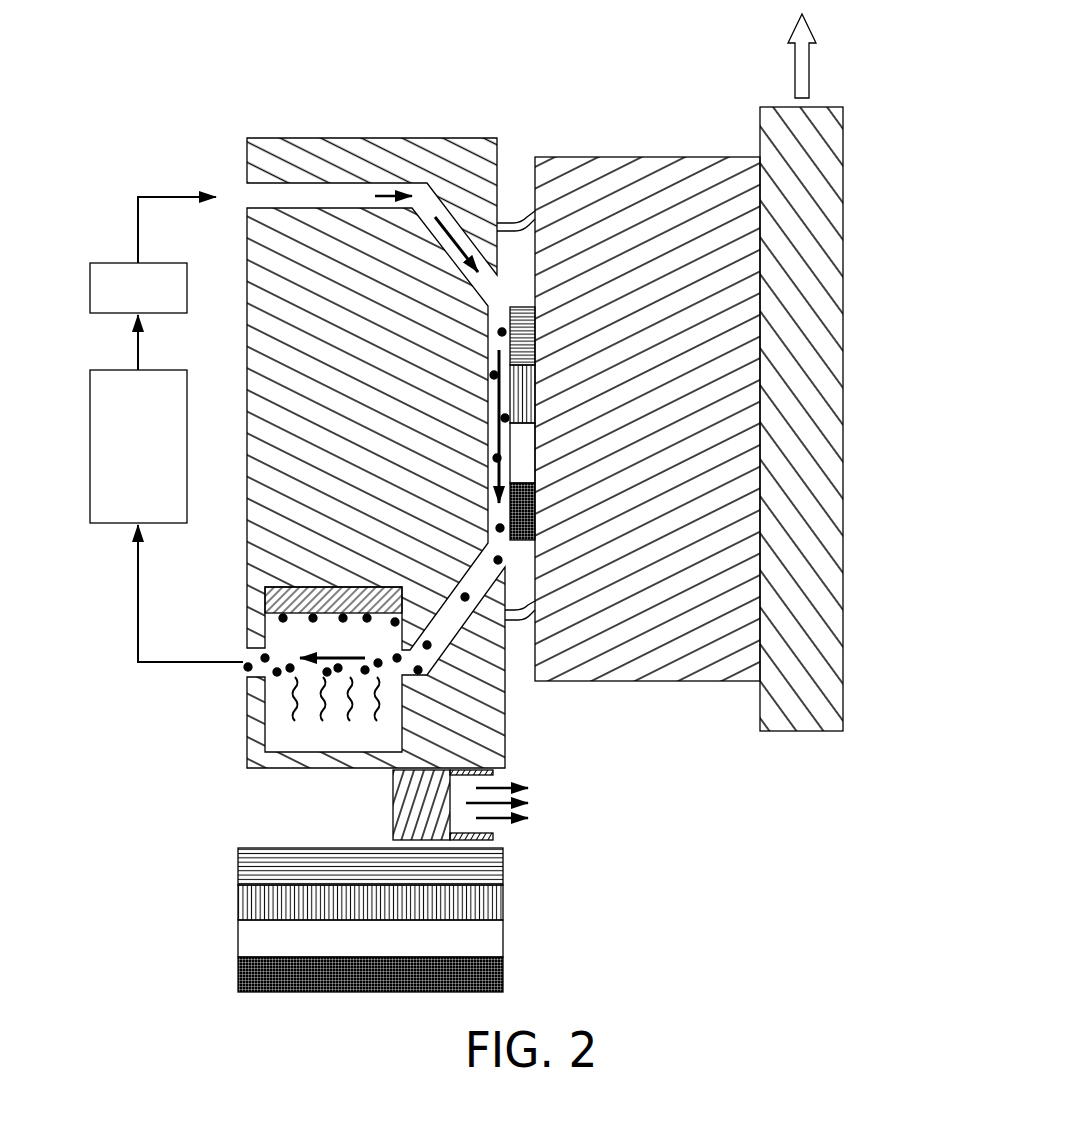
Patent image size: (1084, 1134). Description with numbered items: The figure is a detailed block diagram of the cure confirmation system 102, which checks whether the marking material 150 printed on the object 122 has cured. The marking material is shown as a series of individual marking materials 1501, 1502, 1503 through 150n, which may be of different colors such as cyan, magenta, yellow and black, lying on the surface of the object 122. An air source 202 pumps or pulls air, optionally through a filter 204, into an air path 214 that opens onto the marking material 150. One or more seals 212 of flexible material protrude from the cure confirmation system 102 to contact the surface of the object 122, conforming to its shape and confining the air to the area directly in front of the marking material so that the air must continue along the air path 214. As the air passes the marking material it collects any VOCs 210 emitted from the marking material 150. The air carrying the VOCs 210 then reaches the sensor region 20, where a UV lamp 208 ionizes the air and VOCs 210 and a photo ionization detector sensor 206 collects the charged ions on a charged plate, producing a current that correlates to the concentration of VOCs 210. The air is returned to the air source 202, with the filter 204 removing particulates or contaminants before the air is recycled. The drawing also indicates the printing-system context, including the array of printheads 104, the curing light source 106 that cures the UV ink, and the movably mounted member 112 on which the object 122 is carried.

The PID sensor assembly 20 is at (295, 645).
The cure confirmation system 102 is at (415, 137).
The array of printheads 104 is at (238, 921).
The curing light source 106 is at (393, 803).
The movably mounted member 112 is at (843, 213).
The object 122 is at (648, 157).
The marking material 150 is at (565, 423).
The marking material 1501 is at (536, 330).
The marking material 1502 is at (536, 388).
The marking material 1503 is at (536, 445).
The marking material 150n is at (536, 505).
The air source 202 is at (188, 447).
The filter 204 is at (188, 287).
The photo ionization detector (PID) sensor 206 is at (265, 599).
The UV lamp 208 is at (290, 735).
The VOCs 210 is at (498, 332).
The seal 212 is at (512, 221).
The air path 214 is at (377, 182).